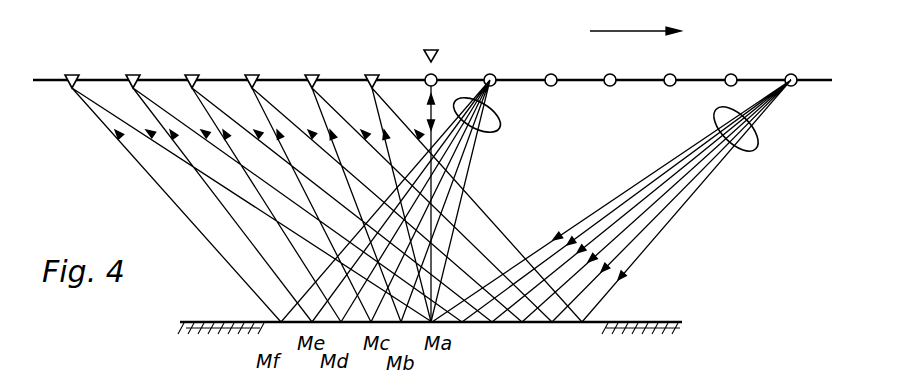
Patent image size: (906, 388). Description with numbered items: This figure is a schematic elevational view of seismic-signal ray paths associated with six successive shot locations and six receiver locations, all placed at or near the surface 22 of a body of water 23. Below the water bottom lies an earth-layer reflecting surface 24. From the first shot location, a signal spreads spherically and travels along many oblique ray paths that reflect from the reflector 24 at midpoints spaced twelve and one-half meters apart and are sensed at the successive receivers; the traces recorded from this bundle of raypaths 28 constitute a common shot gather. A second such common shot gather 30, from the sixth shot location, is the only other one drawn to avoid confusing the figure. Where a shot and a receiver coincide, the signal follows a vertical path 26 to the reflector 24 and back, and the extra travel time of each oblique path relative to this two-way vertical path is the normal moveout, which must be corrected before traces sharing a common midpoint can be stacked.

The surface 22 is at (815, 78).
The body of water 23 is at (750, 229).
The sub-bottom earth-layer reflecting surface 24 is at (661, 320).
The vertical path 26 is at (429, 113).
The bundle of raypaths 28 is at (500, 125).
The common shot gather 30 is at (757, 143).